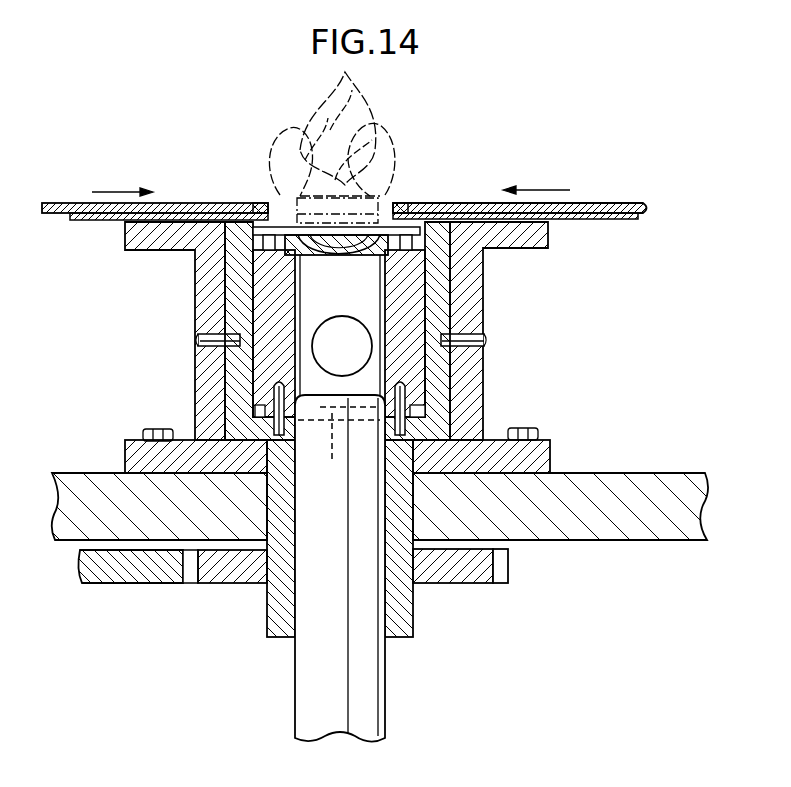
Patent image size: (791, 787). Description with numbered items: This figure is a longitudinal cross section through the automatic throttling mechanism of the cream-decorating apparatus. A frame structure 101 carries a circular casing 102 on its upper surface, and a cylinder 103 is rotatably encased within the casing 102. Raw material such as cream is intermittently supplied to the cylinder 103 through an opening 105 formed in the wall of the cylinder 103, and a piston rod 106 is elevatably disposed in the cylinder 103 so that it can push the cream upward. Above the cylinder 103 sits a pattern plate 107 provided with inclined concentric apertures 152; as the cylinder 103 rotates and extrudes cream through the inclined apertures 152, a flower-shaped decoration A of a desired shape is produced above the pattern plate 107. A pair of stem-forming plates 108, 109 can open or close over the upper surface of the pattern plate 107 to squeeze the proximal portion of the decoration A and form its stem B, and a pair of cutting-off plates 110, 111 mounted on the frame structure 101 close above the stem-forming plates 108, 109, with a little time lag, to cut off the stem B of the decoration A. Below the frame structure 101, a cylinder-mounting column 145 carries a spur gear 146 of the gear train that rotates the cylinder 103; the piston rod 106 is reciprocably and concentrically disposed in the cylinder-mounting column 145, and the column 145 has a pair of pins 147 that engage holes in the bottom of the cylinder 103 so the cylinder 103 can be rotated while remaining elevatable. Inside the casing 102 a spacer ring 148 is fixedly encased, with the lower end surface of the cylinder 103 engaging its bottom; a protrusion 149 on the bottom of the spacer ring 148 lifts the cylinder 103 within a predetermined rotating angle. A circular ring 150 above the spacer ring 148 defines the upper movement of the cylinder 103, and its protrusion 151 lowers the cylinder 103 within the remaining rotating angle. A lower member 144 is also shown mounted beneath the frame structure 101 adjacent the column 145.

The frame structure 101 is at (633, 487).
The circular casing 102 is at (482, 300).
The cylinder 103 is at (416, 358).
The opening 105 is at (322, 348).
The piston rod 106 is at (368, 636).
The pattern plate 107 is at (366, 236).
The left stem-forming plate 108 is at (263, 208).
The right stem-forming plate 109 is at (406, 227).
The left cutting-off plate 110 is at (183, 203).
The right cutting-off plate 111 is at (484, 205).
The lower left block 144 is at (155, 575).
The cylinder-mounting column 145 is at (275, 590).
The spur gear 146 is at (477, 577).
The pins 147 is at (275, 400).
The spacer ring 148 is at (443, 395).
The protrusion 149 is at (339, 450).
The circular ring 150 is at (409, 209).
The protrusion 151 is at (326, 252).
The inclined concentric apertures 152 is at (350, 255).
The flower-shaped decoration A is at (322, 120).
The stem B is at (290, 200).